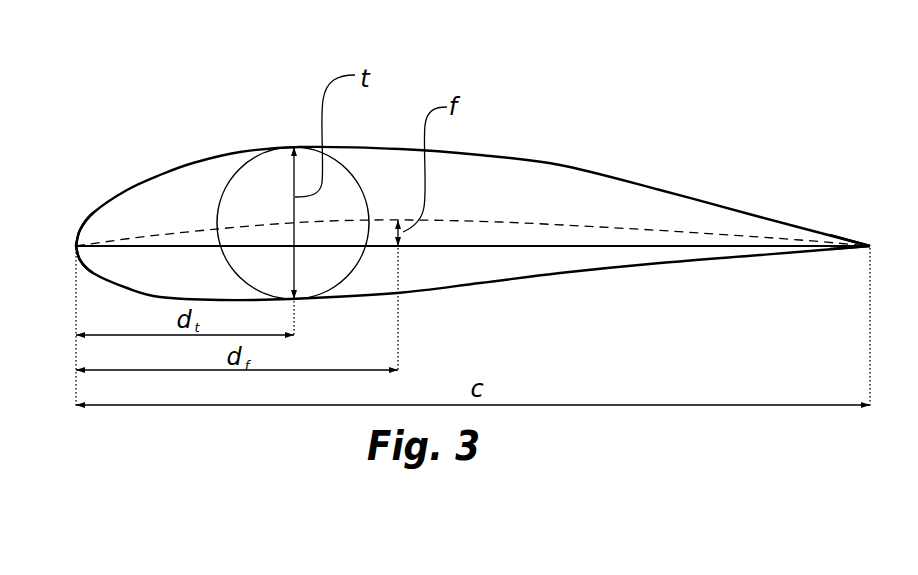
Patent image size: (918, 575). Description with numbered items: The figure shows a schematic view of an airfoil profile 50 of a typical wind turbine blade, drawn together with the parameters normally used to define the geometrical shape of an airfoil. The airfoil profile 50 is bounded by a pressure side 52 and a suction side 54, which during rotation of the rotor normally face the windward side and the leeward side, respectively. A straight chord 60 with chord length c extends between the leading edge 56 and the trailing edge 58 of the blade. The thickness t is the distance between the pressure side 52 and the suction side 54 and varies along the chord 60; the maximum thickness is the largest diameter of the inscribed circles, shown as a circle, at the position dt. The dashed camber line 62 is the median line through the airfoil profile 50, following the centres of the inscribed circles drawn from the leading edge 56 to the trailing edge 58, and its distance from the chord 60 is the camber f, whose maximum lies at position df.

The airfoil profile 50 is at (456, 173).
The pressure side 52 is at (628, 272).
The suction side 54 is at (570, 167).
The leading edge 56 is at (73, 243).
The trailing edge 58 is at (869, 244).
The chord 60 is at (668, 245).
The camber line 62 is at (462, 218).